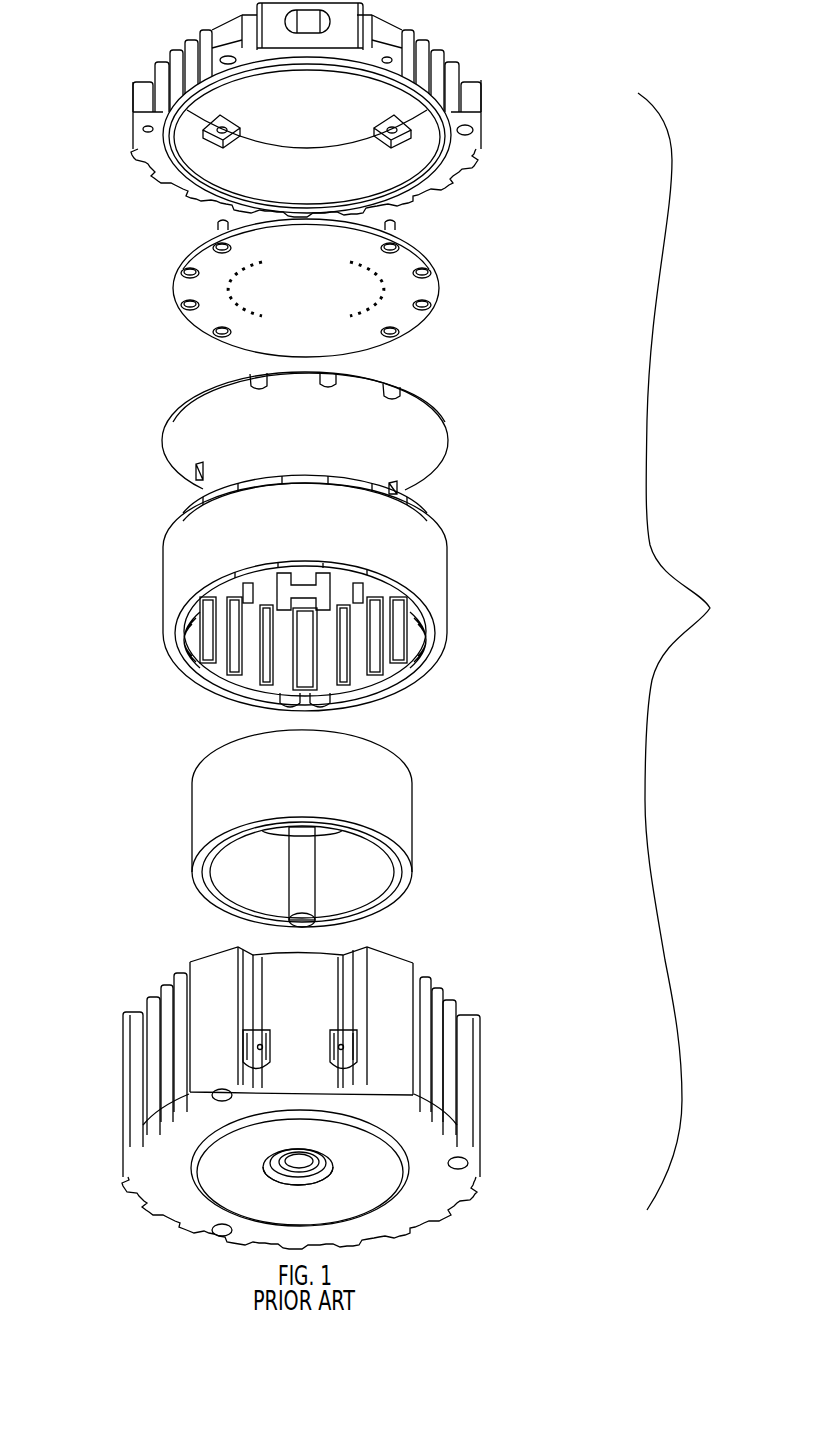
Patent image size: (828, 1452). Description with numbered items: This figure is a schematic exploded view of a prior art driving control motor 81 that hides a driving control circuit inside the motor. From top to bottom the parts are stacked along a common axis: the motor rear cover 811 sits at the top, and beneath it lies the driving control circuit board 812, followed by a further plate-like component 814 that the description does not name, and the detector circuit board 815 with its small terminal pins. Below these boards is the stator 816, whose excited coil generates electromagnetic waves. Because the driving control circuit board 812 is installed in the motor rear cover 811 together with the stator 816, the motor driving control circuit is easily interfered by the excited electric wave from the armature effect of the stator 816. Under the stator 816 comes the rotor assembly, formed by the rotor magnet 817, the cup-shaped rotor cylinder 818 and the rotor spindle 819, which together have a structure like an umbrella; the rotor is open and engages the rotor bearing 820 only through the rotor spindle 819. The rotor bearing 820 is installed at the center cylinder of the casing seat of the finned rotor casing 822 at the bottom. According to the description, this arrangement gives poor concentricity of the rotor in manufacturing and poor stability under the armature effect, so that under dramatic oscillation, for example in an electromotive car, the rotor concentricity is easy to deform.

The driving control motor 81 is at (690, 651).
The motor rear cover 811 is at (482, 101).
The driving control circuit board 812 is at (443, 292).
The insulating plate 814 is at (448, 438).
The detector circuit board 815 is at (196, 472).
The stator 816 is at (447, 573).
The rotor magnet 817 is at (405, 790).
The rotor cylinder 818 is at (380, 880).
The rotor spindle 819 is at (308, 897).
The rotor bearing 820 is at (332, 1166).
The rotor casing 822 is at (393, 1013).